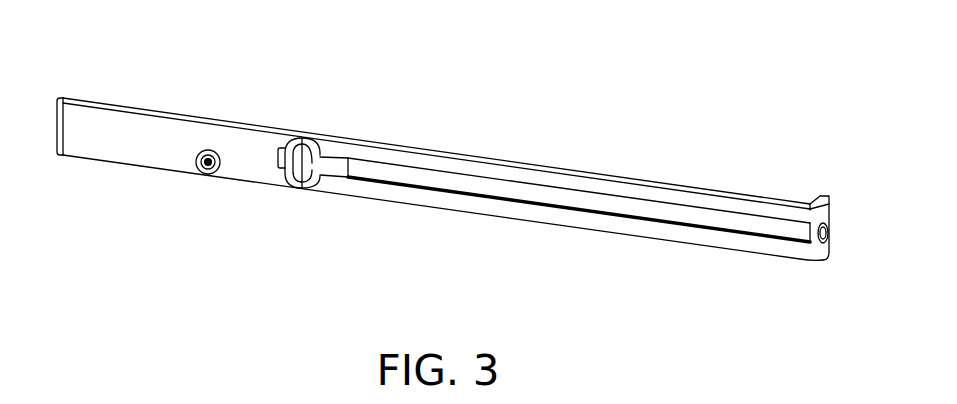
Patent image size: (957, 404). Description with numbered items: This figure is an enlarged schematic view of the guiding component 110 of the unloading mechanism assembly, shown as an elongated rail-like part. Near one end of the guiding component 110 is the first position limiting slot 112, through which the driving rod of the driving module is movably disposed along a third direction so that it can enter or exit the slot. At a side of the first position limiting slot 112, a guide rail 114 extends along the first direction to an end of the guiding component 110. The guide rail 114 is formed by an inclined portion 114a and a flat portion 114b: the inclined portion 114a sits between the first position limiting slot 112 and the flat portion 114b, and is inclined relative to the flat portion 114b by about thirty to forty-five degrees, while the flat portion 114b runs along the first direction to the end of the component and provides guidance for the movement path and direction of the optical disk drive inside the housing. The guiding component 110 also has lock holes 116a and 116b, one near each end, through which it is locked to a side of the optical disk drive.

The guiding component 110 is at (741, 147).
The first position limiting slot 112 is at (299, 162).
The guide rail 114 is at (538, 61).
The inclined portion 114a is at (340, 165).
The flat portion 114b is at (537, 193).
The lock hole 116a is at (825, 241).
The lock hole 116b is at (211, 169).